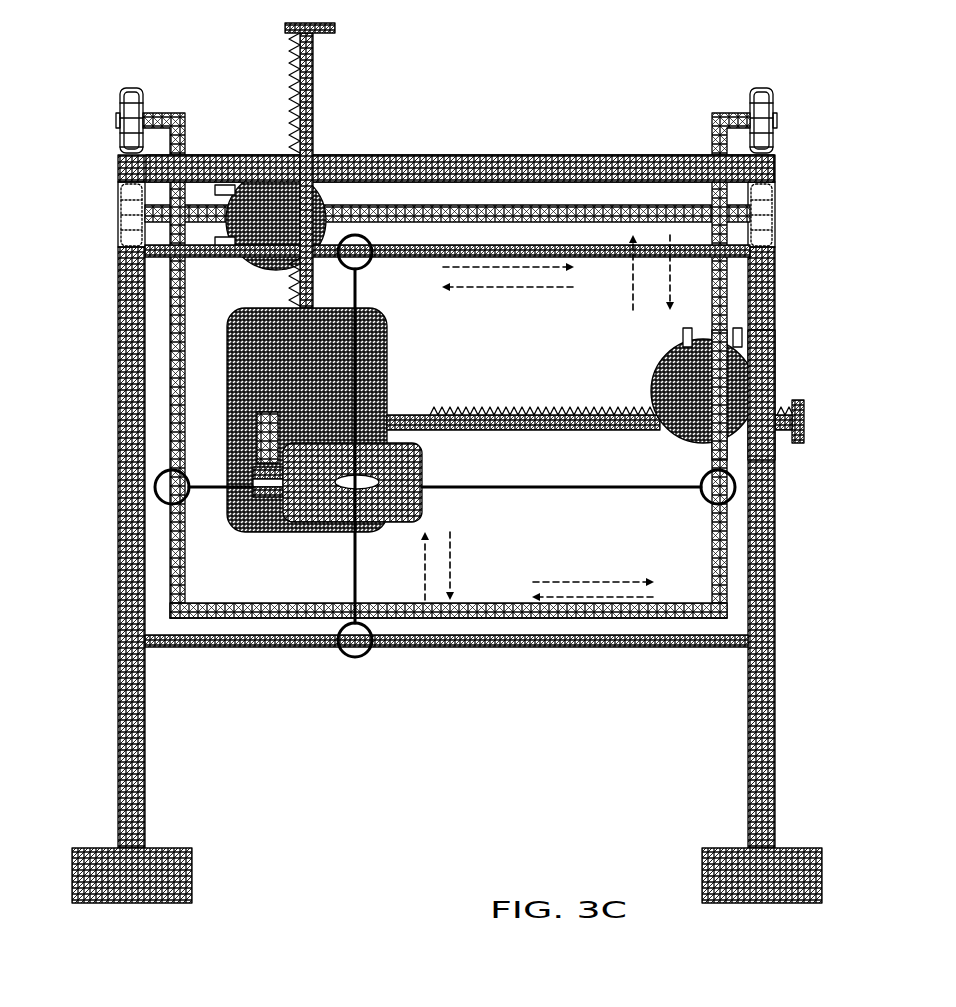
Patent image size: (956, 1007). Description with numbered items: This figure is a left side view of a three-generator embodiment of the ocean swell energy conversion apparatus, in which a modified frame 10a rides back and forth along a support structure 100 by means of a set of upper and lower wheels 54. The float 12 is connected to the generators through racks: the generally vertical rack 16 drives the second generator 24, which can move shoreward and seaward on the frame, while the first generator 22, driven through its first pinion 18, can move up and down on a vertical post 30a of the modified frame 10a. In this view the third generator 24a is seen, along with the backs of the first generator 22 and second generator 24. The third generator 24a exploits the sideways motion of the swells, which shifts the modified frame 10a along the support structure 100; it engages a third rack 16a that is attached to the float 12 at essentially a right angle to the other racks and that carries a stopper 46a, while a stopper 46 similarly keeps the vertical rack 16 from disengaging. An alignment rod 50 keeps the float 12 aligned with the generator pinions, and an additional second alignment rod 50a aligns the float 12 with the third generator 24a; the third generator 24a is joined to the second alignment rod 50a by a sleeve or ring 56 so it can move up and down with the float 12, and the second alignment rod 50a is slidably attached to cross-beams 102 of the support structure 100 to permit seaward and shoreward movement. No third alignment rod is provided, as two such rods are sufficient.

The support structure 100 is at (118, 355).
The upper and lower wheels 54 is at (120, 190).
The stopper 46 is at (336, 27).
The vertical rack 16 is at (314, 100).
The second generator 24 is at (248, 260).
The second alignment rod 50a is at (360, 282).
The cross-beams 102 is at (604, 258).
The vertical post 30a is at (186, 355).
The stopper 46a is at (258, 440).
The sleeve or ring 56 is at (403, 476).
The third generator 24a is at (428, 522).
The alignment rod 50 is at (556, 490).
The third rack 16a is at (597, 410).
The first generator 22 is at (662, 358).
The float 12 is at (240, 535).
The first pinion 18 is at (268, 498).
The modified frame 10a is at (223, 620).